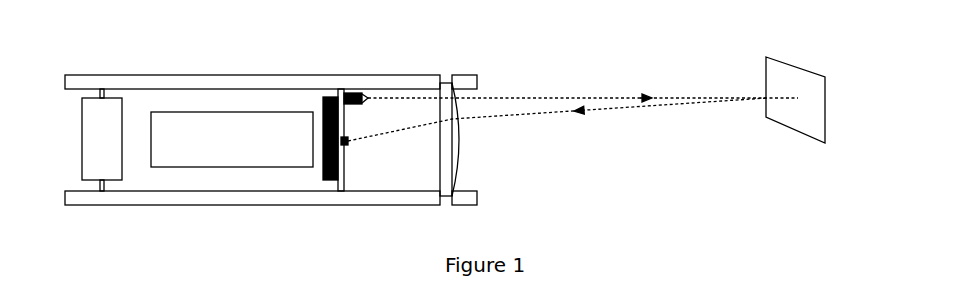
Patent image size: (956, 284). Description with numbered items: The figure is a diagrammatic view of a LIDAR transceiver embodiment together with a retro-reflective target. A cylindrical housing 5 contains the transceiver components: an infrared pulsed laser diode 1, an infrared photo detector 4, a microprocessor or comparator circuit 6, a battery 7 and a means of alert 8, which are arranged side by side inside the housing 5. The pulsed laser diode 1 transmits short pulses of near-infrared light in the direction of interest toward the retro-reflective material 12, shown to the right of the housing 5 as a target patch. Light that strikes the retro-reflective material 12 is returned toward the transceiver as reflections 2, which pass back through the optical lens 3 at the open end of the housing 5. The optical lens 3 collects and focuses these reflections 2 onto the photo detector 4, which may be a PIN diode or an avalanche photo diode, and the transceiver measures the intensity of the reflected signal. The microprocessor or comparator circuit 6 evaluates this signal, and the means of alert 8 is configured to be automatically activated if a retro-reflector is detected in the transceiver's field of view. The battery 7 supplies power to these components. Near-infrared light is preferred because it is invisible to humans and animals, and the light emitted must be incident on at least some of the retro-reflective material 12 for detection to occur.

The pulsed laser diode 1 is at (354, 80).
The reflections 2 is at (616, 121).
The optical lens 3 is at (470, 153).
The photo detector 4 is at (351, 150).
The cylindrical housing 5 is at (191, 67).
The microprocessor or comparator circuit 6 is at (317, 181).
The battery 7 is at (242, 145).
The means of alert 8 is at (104, 145).
The retro-reflective material 12 is at (810, 82).